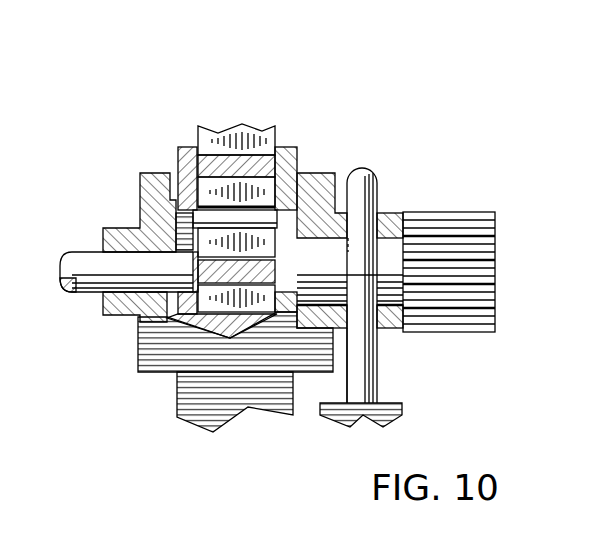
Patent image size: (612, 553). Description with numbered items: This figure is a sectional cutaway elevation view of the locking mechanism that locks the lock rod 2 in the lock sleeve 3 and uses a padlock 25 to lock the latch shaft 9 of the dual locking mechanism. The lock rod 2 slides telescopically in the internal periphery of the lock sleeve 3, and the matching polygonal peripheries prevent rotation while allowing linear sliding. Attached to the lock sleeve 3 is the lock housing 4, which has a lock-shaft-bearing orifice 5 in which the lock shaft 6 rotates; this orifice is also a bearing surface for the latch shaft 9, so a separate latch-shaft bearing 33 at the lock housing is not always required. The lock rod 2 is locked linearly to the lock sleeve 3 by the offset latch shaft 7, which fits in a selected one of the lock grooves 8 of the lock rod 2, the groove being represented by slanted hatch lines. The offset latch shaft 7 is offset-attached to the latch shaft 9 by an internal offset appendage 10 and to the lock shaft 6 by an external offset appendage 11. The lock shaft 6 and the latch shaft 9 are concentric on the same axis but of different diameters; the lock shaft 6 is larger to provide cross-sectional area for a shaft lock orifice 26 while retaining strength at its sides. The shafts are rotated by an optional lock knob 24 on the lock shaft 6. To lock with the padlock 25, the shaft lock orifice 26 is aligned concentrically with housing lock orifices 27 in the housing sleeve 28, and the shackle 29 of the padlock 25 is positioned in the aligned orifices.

The lock rod 2 is at (240, 124).
The lock sleeve 3 is at (232, 400).
The lock housing 4 is at (200, 358).
The lock-shaft-bearing orifice 5 is at (322, 258).
The lock shaft 6 is at (297, 230).
The offset latch shaft 7 is at (245, 213).
The lock grooves 8 is at (181, 150).
The latch shaft 9 is at (75, 262).
The internal offset appendage 10 is at (168, 185).
The external offset appendage 11 is at (232, 203).
The lock knob 24 is at (448, 212).
The padlock 25 is at (352, 412).
The shaft lock orifice 26 is at (378, 268).
The housing lock orifices 27 is at (350, 310).
The housing sleeve 28 is at (338, 317).
The shackle 29 is at (362, 335).
The latch-shaft bearing 33 is at (103, 228).